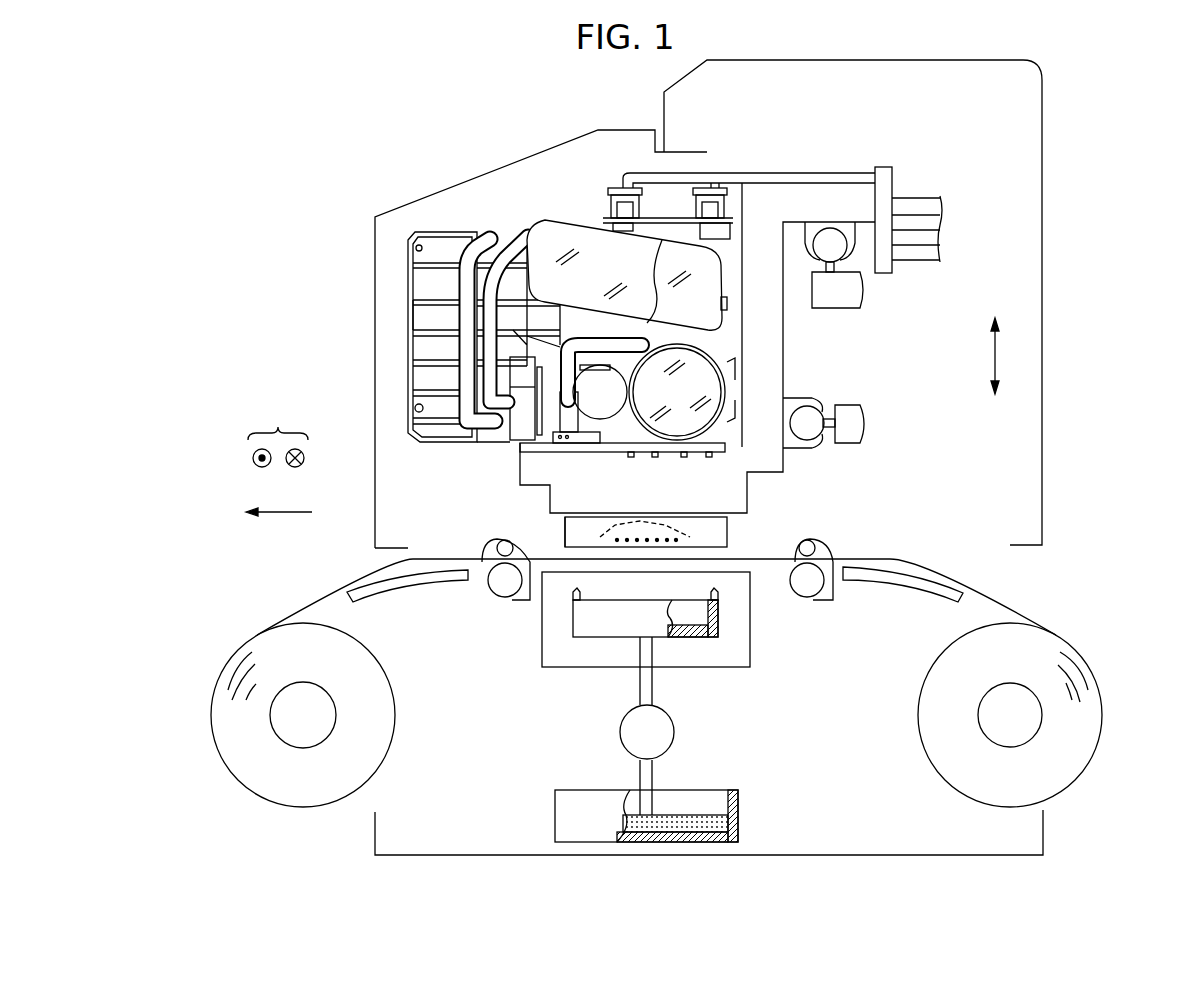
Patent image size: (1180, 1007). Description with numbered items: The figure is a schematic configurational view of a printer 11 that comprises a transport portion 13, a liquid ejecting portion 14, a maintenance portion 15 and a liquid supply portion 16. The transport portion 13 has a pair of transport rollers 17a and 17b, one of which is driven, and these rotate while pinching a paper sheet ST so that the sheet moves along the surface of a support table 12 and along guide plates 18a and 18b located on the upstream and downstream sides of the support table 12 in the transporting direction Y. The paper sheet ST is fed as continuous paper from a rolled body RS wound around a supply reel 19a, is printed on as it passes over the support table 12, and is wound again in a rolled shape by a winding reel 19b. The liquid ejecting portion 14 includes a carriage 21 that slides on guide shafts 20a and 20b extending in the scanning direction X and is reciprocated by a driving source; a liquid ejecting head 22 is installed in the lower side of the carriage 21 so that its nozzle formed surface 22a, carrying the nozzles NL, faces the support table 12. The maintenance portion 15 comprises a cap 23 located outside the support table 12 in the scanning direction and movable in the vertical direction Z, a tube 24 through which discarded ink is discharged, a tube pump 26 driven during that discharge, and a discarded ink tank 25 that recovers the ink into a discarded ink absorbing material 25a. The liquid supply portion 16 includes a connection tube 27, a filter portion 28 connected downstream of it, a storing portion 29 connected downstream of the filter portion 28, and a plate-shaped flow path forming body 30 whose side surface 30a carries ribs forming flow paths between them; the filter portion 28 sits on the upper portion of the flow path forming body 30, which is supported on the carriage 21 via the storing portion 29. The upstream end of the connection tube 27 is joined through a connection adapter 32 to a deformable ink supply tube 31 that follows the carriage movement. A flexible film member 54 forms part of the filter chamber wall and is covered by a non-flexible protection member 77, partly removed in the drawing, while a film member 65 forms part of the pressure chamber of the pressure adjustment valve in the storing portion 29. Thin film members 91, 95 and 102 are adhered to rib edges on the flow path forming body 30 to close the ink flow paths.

The printer 11 is at (447, 140).
The support table 12 is at (583, 640).
The transport portion 13 is at (671, 707).
The liquid ejecting portion 14 is at (697, 365).
The maintenance portion 15 is at (660, 739).
The liquid supply portion 16 is at (552, 335).
The transport roller 17a is at (826, 600).
The transport roller 17b is at (505, 598).
The guide plate 18a is at (897, 594).
The guide plate 18b is at (388, 598).
The supply reel 19a is at (1038, 735).
The winding reel 19b is at (273, 734).
The guide shaft 20a is at (834, 250).
The guide shaft 20b is at (808, 412).
The carriage 21 is at (750, 483).
The liquid ejecting head 22 is at (679, 513).
The nozzle formed surface 22a is at (728, 546).
The cap 23 is at (705, 645).
The tube 24 is at (657, 702).
The discarded ink tank 25 is at (668, 800).
The discarded ink absorbing material 25a is at (712, 815).
The tube pump 26 is at (676, 737).
The connection tube 27 is at (838, 172).
The filter portion 28 is at (590, 222).
The storing portion 29 is at (702, 450).
The flow path forming body 30 is at (442, 299).
The side surface of the flow path forming body 30a is at (422, 279).
The ink supply tube 31 is at (920, 262).
The connection adapter 32 is at (884, 275).
The film member 54 is at (653, 246).
The film member 65 is at (702, 357).
The protection member 77 is at (718, 272).
The thin film member 91 is at (522, 232).
The thin film member 95 is at (480, 236).
The thin film member 102 is at (598, 414).
The paper sheet ST is at (530, 557).
The rolled body RS is at (1037, 715).
The nozzles NL is at (647, 520).